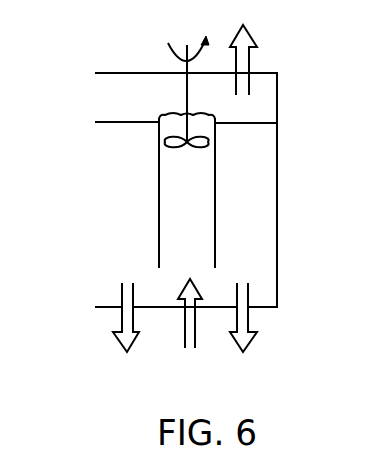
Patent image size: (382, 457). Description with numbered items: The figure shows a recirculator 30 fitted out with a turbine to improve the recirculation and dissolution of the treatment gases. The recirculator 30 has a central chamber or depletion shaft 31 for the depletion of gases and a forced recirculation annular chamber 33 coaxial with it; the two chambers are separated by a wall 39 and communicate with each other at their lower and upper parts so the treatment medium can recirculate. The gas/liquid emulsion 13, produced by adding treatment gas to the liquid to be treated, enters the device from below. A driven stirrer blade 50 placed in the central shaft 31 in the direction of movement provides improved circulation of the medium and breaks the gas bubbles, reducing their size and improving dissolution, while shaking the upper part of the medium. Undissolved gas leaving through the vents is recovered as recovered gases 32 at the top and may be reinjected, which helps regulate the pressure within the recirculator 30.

The gas/liquid emulsion 13 is at (185, 328).
The recirculator 30 is at (277, 223).
The depletion shaft 31 is at (193, 192).
The recovered gases 32 is at (249, 62).
The forced recirculation annular chamber 33 is at (262, 258).
The wall 39 is at (159, 215).
The stirrer blade 50 is at (165, 142).